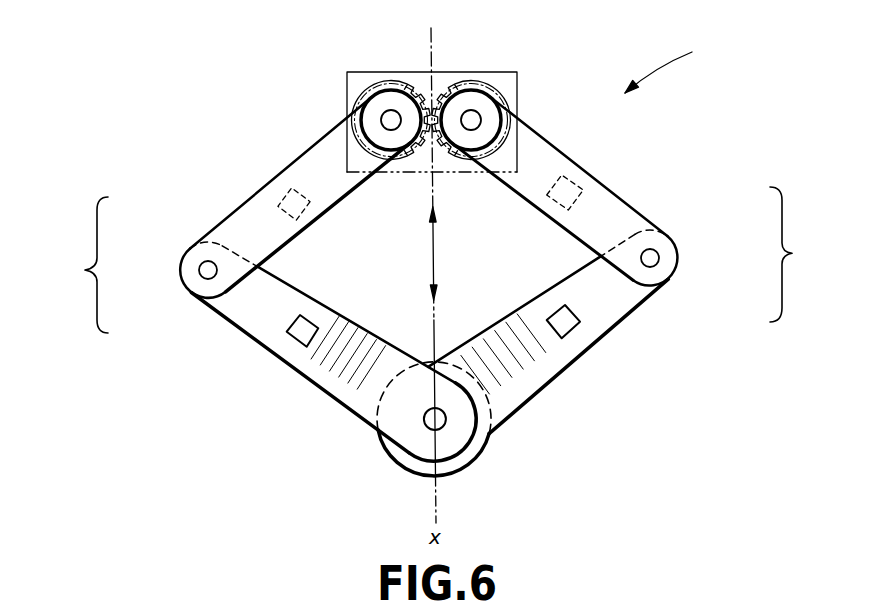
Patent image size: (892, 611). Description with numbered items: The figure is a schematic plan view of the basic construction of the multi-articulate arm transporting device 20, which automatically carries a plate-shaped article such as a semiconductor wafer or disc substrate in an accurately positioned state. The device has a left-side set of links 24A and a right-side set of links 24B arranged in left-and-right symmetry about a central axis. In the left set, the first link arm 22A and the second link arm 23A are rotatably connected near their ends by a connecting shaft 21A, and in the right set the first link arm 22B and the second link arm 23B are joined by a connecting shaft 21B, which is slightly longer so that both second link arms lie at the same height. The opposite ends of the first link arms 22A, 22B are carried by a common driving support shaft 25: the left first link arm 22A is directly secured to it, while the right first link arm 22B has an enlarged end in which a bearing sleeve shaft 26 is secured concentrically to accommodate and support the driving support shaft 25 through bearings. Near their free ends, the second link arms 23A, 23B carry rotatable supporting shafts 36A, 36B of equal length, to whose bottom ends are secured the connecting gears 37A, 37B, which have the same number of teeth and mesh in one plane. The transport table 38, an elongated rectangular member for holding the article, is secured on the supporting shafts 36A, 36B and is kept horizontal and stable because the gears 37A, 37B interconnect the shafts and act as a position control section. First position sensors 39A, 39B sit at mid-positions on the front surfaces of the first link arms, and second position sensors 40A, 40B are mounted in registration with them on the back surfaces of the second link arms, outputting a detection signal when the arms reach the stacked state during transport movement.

The multi-articulate arm transporting device 20 is at (743, 65).
The connecting shaft 21A is at (199, 272).
The connecting shaft 21B is at (660, 256).
The first link arm 22A is at (235, 310).
The first link arm 22B is at (627, 295).
The second link arm 23A is at (235, 227).
The second link arm 23B is at (618, 220).
The left-side set of links 24A is at (78, 288).
The right-side set of links 24B is at (865, 268).
The driving support shaft 25 is at (425, 421).
The bearing sleeve shaft 26 is at (473, 460).
The supporting shaft 36A is at (382, 121).
The supporting shaft 36B is at (479, 115).
The connecting gear 37A is at (368, 88).
The connecting gear 37B is at (457, 80).
The transport table 38 is at (415, 70).
The first position sensor 39A is at (300, 332).
The first position sensor 39B is at (570, 327).
The second position sensor 40A is at (290, 192).
The second position sensor 40B is at (572, 182).